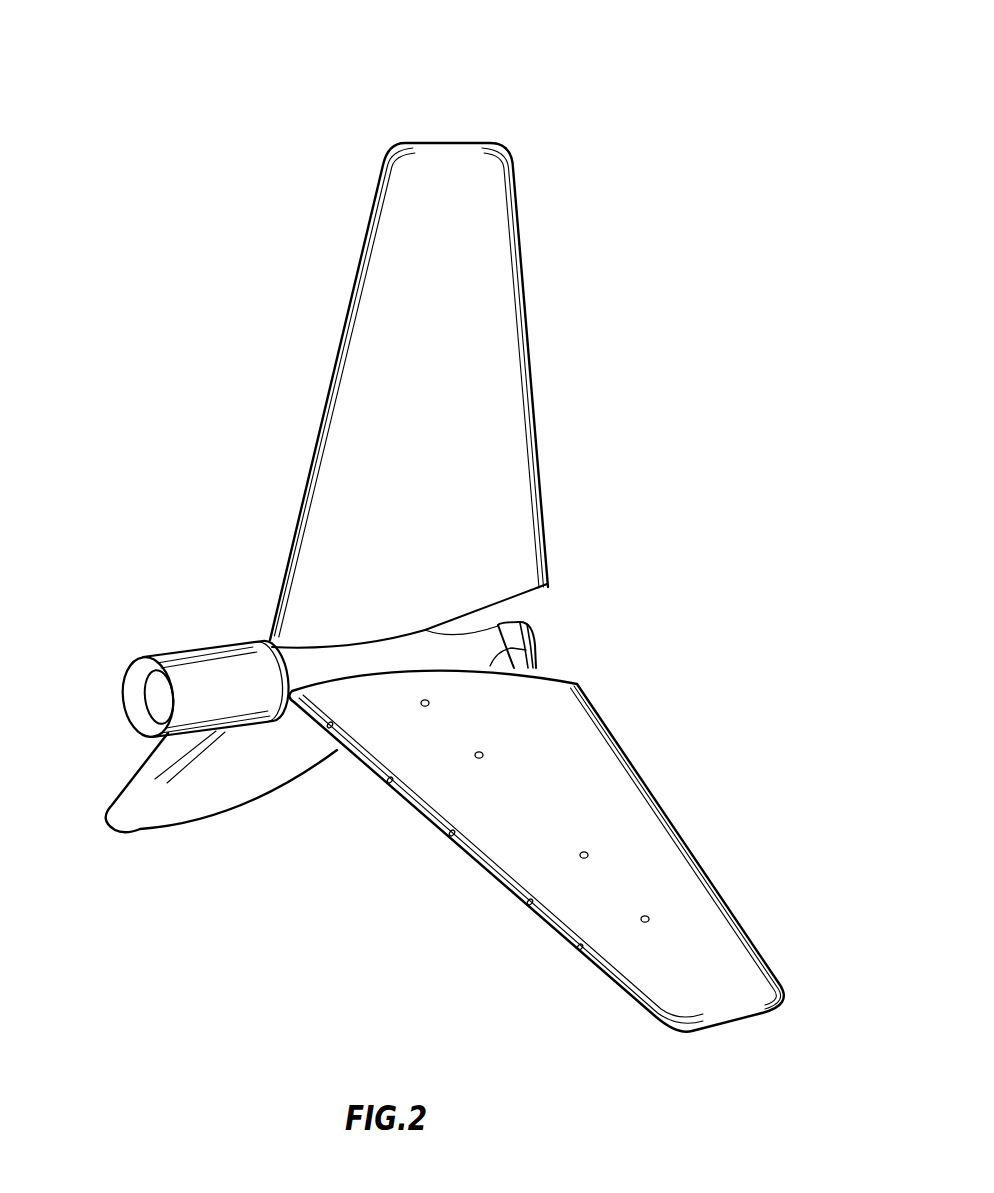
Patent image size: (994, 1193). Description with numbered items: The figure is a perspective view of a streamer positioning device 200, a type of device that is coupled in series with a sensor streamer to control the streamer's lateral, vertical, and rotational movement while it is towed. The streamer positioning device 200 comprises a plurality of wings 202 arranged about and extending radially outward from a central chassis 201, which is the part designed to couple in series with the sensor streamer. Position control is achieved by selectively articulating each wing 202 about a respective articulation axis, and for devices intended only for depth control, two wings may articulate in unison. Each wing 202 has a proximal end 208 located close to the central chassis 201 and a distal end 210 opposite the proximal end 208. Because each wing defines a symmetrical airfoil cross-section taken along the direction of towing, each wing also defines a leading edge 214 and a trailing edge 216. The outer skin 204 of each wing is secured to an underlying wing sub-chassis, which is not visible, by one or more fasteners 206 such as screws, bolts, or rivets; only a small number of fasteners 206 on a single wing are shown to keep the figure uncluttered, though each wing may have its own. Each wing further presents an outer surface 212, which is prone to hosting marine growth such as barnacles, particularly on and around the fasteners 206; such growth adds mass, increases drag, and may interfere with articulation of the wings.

The streamer positioning device 200 is at (160, 240).
The central chassis 201 is at (170, 653).
The wing 202 is at (442, 255).
The outer skin 204 is at (557, 820).
The fastener 206 is at (340, 752).
The proximal end 208 is at (520, 623).
The distal end 210 is at (457, 142).
The outer surface 212 is at (455, 312).
The leading edge 214 is at (545, 935).
The trailing edge 216 is at (732, 910).